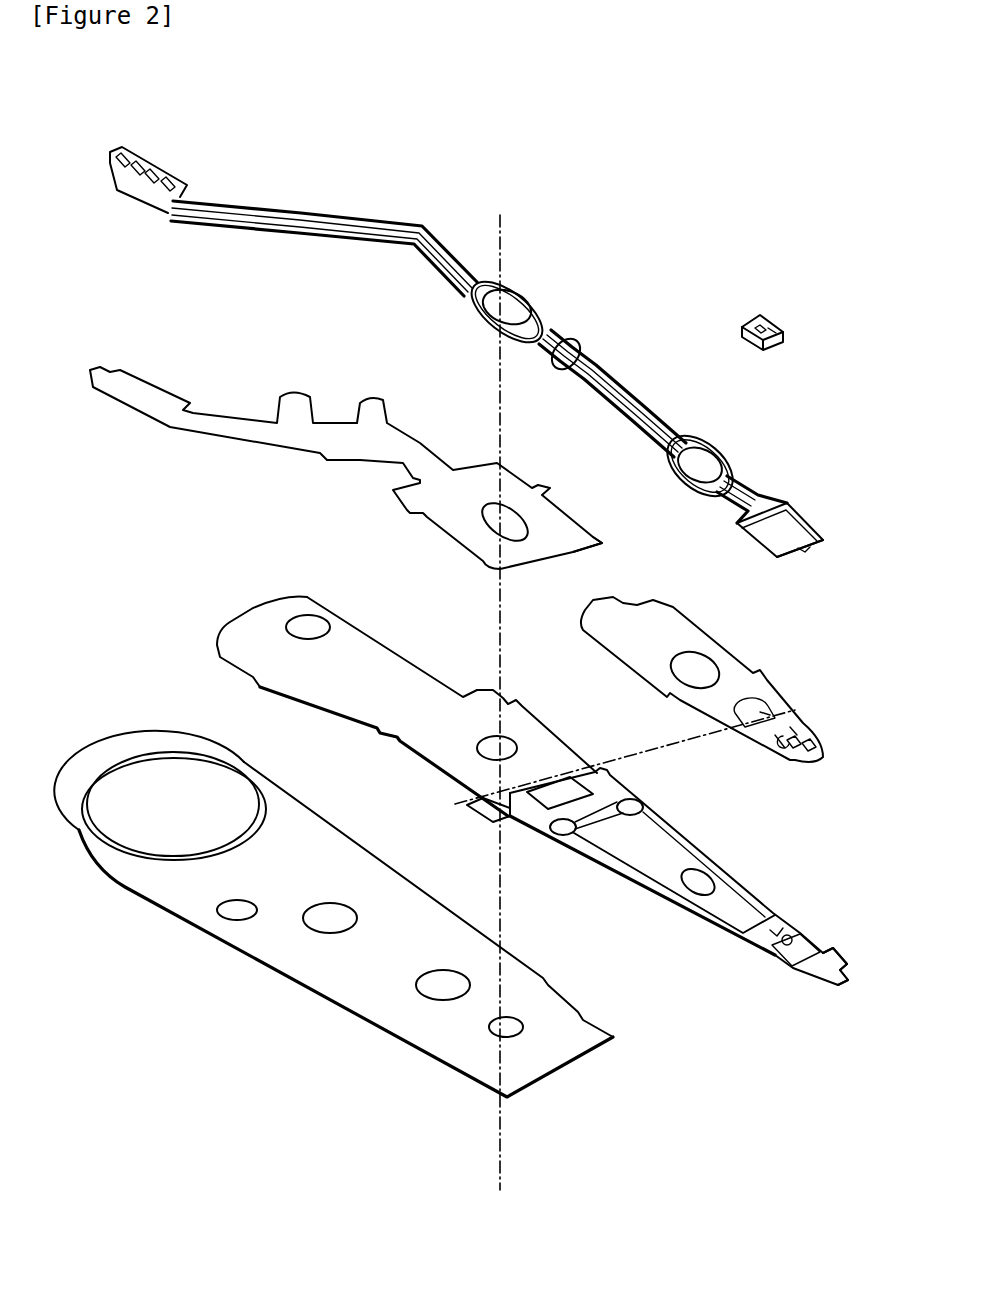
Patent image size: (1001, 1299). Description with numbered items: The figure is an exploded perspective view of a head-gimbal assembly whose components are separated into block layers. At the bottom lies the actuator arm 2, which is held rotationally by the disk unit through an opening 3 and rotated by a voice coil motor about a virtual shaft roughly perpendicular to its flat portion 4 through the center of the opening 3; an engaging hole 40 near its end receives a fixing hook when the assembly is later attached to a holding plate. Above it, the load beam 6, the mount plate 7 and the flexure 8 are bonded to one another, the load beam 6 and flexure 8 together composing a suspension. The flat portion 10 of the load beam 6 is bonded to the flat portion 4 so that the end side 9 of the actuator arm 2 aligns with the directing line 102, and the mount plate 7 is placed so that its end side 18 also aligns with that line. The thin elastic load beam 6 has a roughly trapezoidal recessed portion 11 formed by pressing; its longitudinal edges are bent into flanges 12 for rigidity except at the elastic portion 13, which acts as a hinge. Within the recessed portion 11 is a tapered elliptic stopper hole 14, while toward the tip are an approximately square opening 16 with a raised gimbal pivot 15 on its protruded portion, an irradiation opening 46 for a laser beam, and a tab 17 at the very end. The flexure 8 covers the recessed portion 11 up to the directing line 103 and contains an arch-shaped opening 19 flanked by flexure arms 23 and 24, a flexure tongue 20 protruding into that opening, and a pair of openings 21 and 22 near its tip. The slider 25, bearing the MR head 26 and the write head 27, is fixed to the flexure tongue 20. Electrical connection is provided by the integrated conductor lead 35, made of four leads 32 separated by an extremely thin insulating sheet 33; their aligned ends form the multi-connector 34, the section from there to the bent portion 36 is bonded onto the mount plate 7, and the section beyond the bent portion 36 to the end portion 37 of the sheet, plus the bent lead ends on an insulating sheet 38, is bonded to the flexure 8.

The actuator arm 2 is at (333, 923).
The opening 3 is at (200, 775).
The flat portion 4 is at (325, 970).
The load beam 6 is at (647, 900).
The mount plate 7 is at (476, 482).
The flexure 8 is at (721, 700).
The end side 9 is at (577, 1065).
The flat portion 10 is at (407, 690).
The recessed portion 11 is at (653, 840).
The flanges 12 is at (753, 880).
The portion 13 is at (480, 813).
The tapered elliptic stopper hole 14 is at (707, 880).
The gimbal pivot 15 is at (787, 940).
The opening 16 is at (793, 960).
The tab 17 is at (823, 973).
The end side 18 is at (593, 537).
The arch-shaped opening 19 is at (763, 730).
The flexure tongue 20 is at (803, 733).
The opening 21 is at (790, 760).
The opening 22 is at (807, 743).
The flexure arm 23 is at (770, 752).
The flexure arm 24 is at (793, 727).
The slider 25 is at (792, 317).
The MR head 26 is at (770, 322).
The write head 27 is at (775, 327).
The leads 32 is at (652, 425).
The insulating sheet 33 is at (735, 470).
The multi-connector 34 is at (170, 173).
The integrated conductor lead 35 is at (494, 363).
The bent portion 36 is at (613, 357).
The end portion 37 is at (756, 513).
The insulating sheet 38 is at (803, 553).
The engaging hole 40 is at (500, 1035).
The irradiation opening 46 is at (777, 930).
The directing line 102 is at (630, 757).
The directing line 103 is at (767, 713).